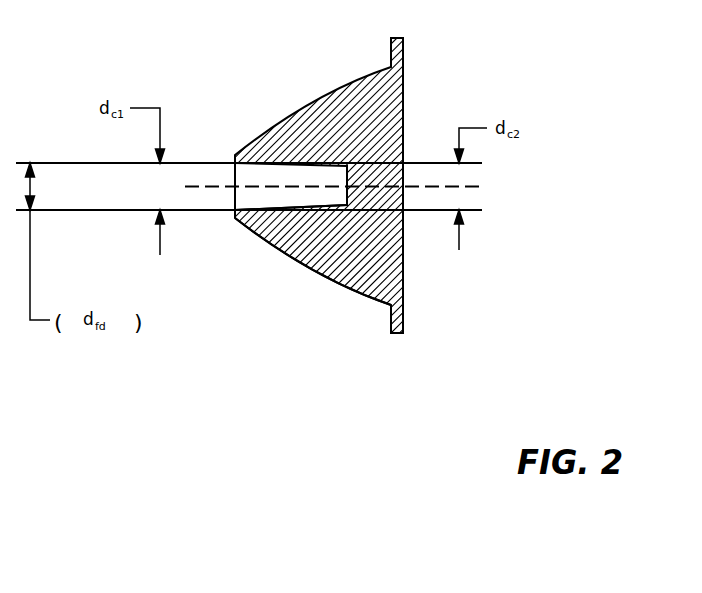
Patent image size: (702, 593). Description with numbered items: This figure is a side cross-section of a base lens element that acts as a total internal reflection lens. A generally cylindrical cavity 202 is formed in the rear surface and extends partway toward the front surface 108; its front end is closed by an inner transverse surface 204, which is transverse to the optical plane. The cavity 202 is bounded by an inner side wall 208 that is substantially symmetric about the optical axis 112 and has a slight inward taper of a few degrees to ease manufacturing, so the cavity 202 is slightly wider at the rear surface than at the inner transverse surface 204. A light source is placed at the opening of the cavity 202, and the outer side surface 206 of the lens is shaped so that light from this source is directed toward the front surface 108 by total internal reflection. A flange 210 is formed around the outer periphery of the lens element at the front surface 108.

The cavity 202 is at (268, 183).
The inner transverse surface 204 is at (402, 133).
The front surface 108 is at (404, 136).
The optical axis 112 is at (479, 186).
The outer side surface 206 is at (347, 340).
The inner side wall 208 is at (290, 209).
The flange 210 is at (454, 214).